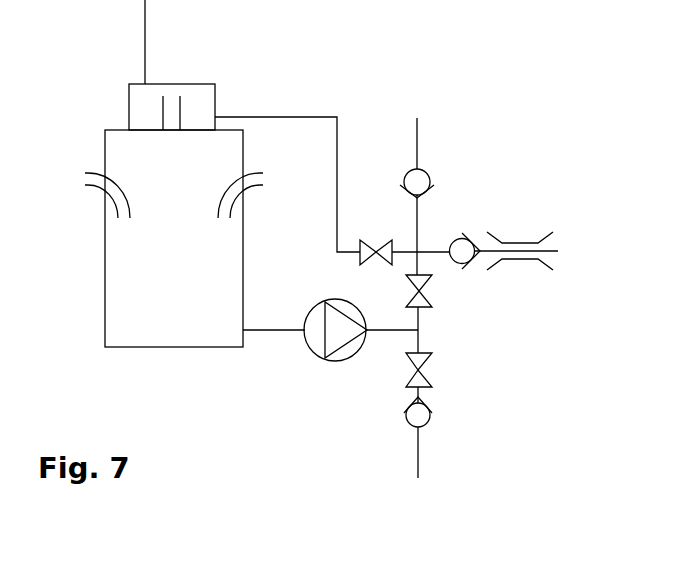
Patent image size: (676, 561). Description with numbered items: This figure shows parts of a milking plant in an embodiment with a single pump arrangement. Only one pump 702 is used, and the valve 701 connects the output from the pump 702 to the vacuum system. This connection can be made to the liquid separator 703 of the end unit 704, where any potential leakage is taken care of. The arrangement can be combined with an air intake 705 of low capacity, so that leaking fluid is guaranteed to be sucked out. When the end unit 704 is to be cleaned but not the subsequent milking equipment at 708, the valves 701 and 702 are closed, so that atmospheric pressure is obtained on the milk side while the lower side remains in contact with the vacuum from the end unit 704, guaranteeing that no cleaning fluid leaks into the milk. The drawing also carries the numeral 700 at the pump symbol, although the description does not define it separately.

The pump 700 is at (322, 348).
The valve 701 is at (362, 263).
The pump 702 is at (430, 288).
The liquid separator 703 is at (190, 91).
The end unit 704 is at (190, 287).
The air intake 705 is at (518, 240).
The subsequent milking equipment 708 is at (416, 147).